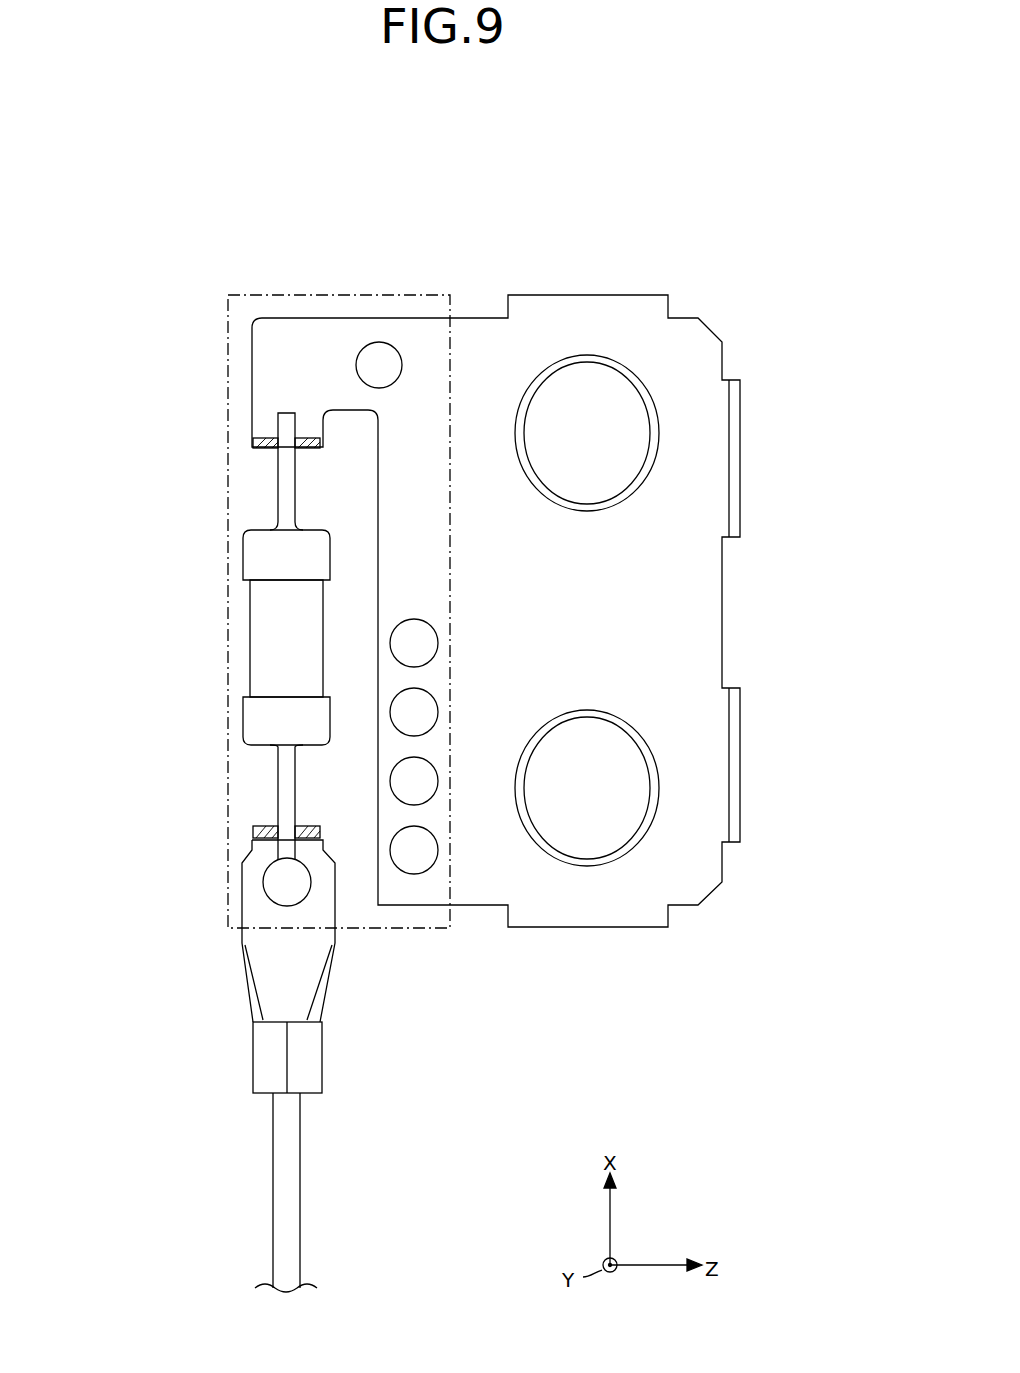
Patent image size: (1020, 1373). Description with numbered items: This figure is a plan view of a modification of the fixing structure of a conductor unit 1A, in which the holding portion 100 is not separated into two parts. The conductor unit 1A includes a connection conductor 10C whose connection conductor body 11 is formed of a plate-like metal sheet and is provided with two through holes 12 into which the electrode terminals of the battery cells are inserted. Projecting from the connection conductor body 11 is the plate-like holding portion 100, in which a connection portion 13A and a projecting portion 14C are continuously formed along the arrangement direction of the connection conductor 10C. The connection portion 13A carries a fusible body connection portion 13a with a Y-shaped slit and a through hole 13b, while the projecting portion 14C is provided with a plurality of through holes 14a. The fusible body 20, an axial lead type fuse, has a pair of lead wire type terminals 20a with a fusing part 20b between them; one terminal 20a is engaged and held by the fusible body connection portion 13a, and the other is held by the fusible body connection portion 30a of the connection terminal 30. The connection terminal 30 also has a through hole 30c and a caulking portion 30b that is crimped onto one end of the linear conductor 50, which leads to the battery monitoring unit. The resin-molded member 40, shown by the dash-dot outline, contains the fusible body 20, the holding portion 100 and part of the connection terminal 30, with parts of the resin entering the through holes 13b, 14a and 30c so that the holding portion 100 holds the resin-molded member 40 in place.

The conductor unit 1A is at (495, 146).
The connection conductor 10C is at (587, 264).
The connection conductor body 11 is at (690, 603).
The through hole 12 is at (658, 432).
The holding portion 100 is at (316, 547).
The connection portion 13A is at (266, 359).
The fusible body connection portion 13a is at (268, 452).
The through hole 13b is at (379, 341).
The projecting portion 14C is at (400, 583).
The through hole 14a is at (438, 845).
The resin-molded member 40 is at (318, 294).
The fusible body 20 is at (113, 513).
The terminal 20a is at (283, 487).
The fusing part 20b is at (270, 638).
The connection terminal 30 is at (113, 808).
The fusible body connection portion 30a is at (265, 826).
The caulking portion 30b is at (267, 1052).
The through hole 30c is at (263, 882).
The linear conductor 50 is at (287, 1203).